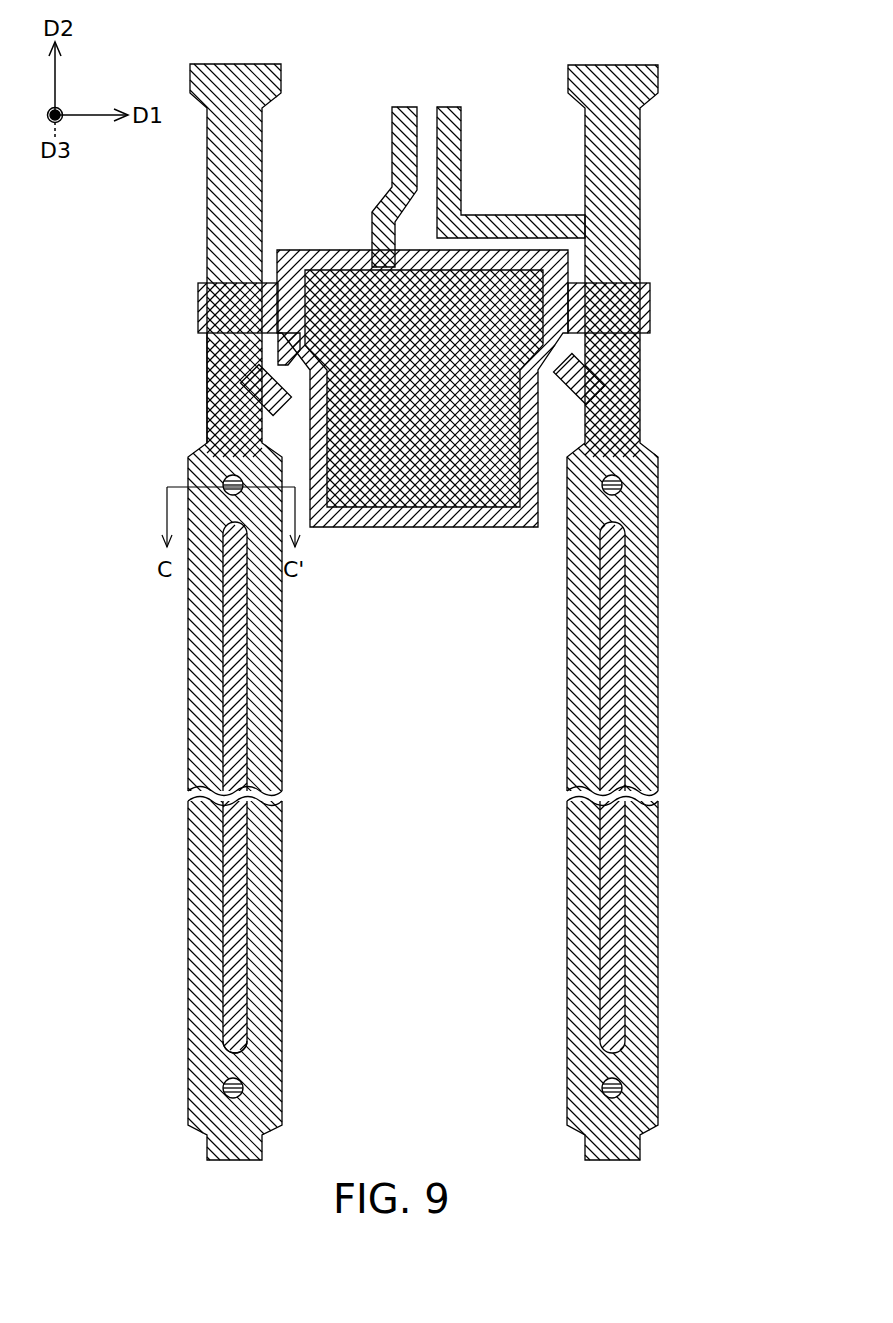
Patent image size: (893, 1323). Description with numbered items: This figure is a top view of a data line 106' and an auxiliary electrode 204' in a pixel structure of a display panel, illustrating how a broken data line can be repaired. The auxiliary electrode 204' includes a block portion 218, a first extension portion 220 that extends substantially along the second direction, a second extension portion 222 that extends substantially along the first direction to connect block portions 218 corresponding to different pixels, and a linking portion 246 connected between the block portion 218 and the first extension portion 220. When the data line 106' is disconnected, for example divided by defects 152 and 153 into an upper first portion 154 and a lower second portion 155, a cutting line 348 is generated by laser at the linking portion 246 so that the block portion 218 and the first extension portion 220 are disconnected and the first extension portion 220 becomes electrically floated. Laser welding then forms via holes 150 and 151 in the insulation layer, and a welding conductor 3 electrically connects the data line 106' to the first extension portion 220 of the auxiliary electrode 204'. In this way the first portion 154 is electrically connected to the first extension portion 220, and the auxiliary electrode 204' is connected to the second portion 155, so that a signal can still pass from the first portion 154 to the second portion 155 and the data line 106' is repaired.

The block portion 218 is at (370, 265).
The auxiliary electrode 204' is at (193, 308).
The second extension portion 222 is at (650, 305).
The cutting line 348 is at (278, 350).
The linking portion 246 is at (262, 386).
The first portion 154 is at (206, 398).
The welding conductor 3 is at (223, 485).
The via hole 150 is at (236, 497).
The data line 106' is at (424, 612).
The defect 152 is at (184, 792).
The defect 153 is at (286, 792).
The first extension portion 220 is at (612, 790).
The second portion 155 is at (223, 1088).
The via hole 151 is at (243, 1088).